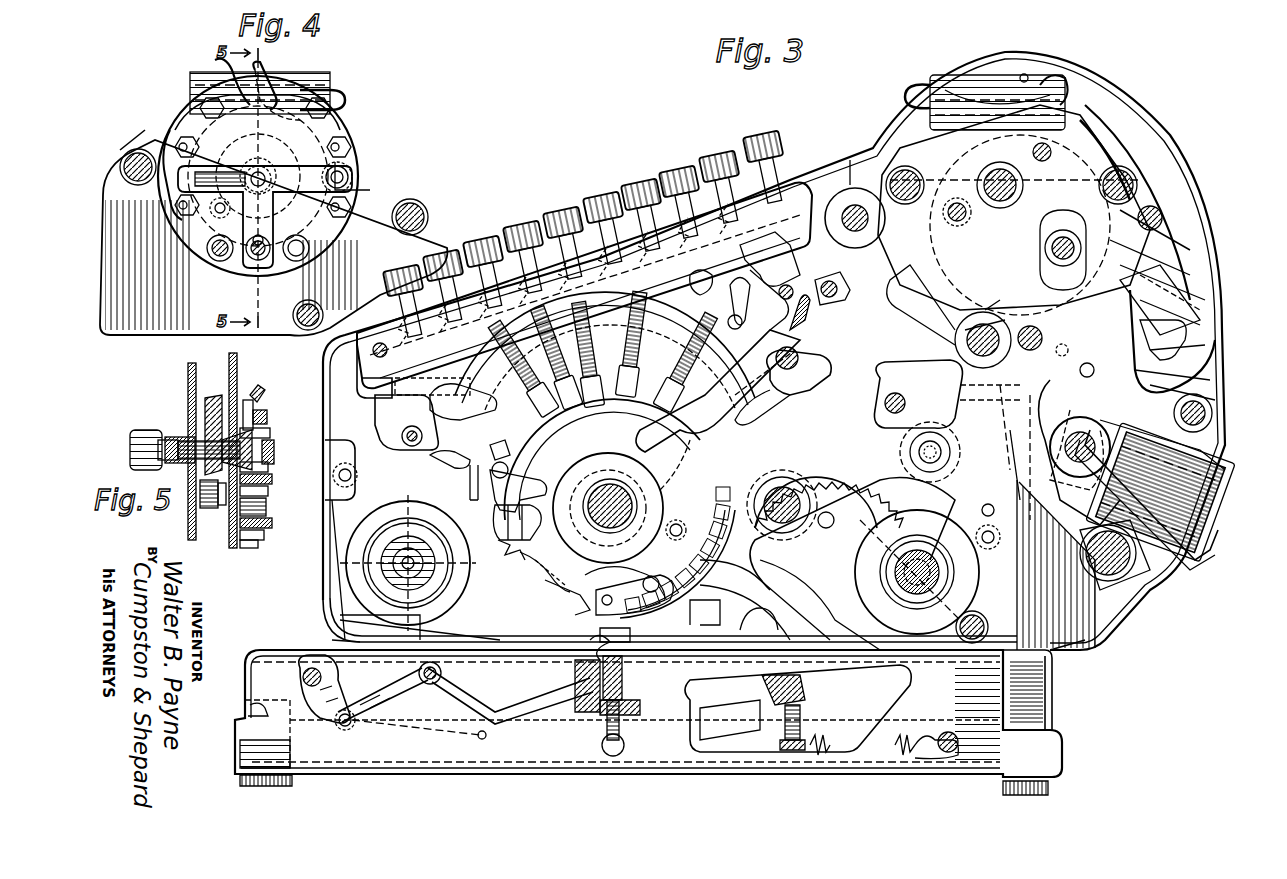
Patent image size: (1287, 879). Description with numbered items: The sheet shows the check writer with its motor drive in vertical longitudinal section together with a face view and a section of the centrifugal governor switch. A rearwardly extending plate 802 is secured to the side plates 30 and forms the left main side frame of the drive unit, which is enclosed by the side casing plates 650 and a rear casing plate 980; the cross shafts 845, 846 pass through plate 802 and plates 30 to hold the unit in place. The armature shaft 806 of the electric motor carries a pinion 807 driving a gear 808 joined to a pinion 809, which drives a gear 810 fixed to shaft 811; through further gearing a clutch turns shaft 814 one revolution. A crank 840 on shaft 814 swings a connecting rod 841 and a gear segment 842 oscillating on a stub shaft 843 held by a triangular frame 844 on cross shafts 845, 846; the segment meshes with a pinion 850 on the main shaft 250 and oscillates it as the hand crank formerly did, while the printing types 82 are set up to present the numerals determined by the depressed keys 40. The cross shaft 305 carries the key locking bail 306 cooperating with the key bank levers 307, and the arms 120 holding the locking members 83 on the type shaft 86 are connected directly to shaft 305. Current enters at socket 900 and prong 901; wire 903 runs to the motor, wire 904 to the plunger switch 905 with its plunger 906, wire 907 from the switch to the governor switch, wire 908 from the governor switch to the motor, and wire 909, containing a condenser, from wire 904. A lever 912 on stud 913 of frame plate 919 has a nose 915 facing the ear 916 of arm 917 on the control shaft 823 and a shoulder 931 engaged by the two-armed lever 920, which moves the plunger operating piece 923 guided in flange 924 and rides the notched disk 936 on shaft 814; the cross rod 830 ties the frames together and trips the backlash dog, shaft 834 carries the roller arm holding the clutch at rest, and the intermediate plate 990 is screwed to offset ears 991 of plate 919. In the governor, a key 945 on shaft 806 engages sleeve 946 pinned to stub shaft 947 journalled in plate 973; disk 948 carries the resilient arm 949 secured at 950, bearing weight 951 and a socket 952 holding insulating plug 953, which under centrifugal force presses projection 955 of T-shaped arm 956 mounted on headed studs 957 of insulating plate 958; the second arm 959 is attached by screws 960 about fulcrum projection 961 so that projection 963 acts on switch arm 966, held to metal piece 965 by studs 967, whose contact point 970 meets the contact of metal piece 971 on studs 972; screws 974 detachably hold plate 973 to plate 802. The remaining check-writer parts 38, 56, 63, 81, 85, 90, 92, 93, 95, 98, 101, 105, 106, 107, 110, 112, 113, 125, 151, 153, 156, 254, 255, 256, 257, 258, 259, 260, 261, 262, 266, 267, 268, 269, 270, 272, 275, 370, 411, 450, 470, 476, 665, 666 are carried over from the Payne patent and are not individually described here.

In FIG. 3, the side plates 30 is at (734, 615).
In FIG. 3, the type bar 38 is at (603, 354).
In FIG. 3, the keys 40 is at (760, 148).
In FIG. 3, the rack 56 is at (662, 380).
In FIG. 3, the latch 63 is at (692, 283).
In FIG. 3, the disc 81 is at (602, 459).
In FIG. 3, the printing types 82 is at (700, 592).
In FIG. 3, the locking members 83 is at (560, 480).
In FIG. 3, the wheel 85 is at (608, 494).
In FIG. 3, the type shaft 86 is at (588, 510).
In FIG. 3, the pawl 90 is at (631, 581).
In FIG. 3, the pin 92 is at (686, 532).
In FIG. 3, the cam slot 93 is at (674, 477).
In FIG. 3, the lever 95 is at (634, 595).
In FIG. 3, the slide 98 is at (505, 520).
In FIG. 3, the hub 101 is at (610, 514).
In FIG. 3, the link 105 is at (530, 560).
In FIG. 3, the spring 106 is at (555, 590).
In FIG. 3, the pawl 107 is at (499, 543).
In FIG. 3, the bar 110 is at (461, 482).
In FIG. 3, the lever 112 is at (518, 482).
In FIG. 3, the pin 113 is at (503, 442).
In FIG. 3, the arms 120 is at (730, 400).
In FIG. 3, the stud 125 is at (909, 404).
In FIG. 3, the lever 151 is at (510, 405).
In FIG. 3, the pivot 153 is at (423, 422).
In FIG. 3, the arm 156 is at (451, 452).
In FIG. 3, the main shaft 250 is at (845, 535).
In FIG. 3, the link 254 is at (765, 600).
In FIG. 3, the link 255 is at (835, 618).
In FIG. 3, the lever 256 is at (807, 708).
In FIG. 3, the plate 257 is at (730, 721).
In FIG. 3, the block 258 is at (808, 685).
In FIG. 3, the screw 259 is at (778, 710).
In FIG. 3, the stud 260 is at (600, 745).
In FIG. 3, the block 261 is at (575, 718).
In FIG. 3, the bracket 262 is at (593, 635).
In FIG. 3, the link 266 is at (510, 696).
In FIG. 3, the pivot 267 is at (442, 673).
In FIG. 3, the link 268 is at (383, 695).
In FIG. 3, the lever 269 is at (337, 689).
In FIG. 3, the pivot 270 is at (350, 724).
In FIG. 3, the rod 272 is at (440, 740).
In FIG. 3, the spring 275 is at (915, 768).
In FIG. 3, the cross shaft 305 is at (783, 386).
In FIG. 3, the key locking bail 306 is at (735, 304).
In FIG. 3, the key bank levers 307 is at (771, 300).
In FIG. 3, the bracket 370 is at (817, 301).
In FIG. 3, the lever 411 is at (788, 262).
In FIG. 3, the wheel 450 is at (470, 583).
In FIG. 3, the bar 470 is at (520, 640).
In FIG. 3, the wheel 476 is at (921, 576).
In FIG. 3, the side casing plates 650 is at (1057, 565).
In FIG. 3, the bracket 665 is at (325, 583).
In FIG. 3, the arm 666 is at (360, 632).
In FIG. 3, the left side frame plate 802 is at (895, 140).
In FIG. 4, the left side frame plate 802 is at (273, 238).
In FIG. 3, the armature shaft 806 is at (982, 185).
In FIG. 5, the armature shaft 806 is at (140, 430).
In FIG. 3, the pinion 807 is at (965, 222).
In FIG. 3, the gear 808 is at (1000, 250).
In FIG. 3, the pinion 809 is at (1063, 237).
In FIG. 3, the gear 810 is at (1175, 240).
In FIG. 3, the shaft 811 is at (1190, 335).
In FIG. 3, the shaft 814 is at (1065, 470).
In FIG. 3, the control shaft 823 is at (1212, 413).
In FIG. 3, the cross rod 830 is at (1105, 580).
In FIG. 3, the shaft 834 is at (1025, 350).
In FIG. 3, the crank 840 is at (1079, 452).
In FIG. 3, the connecting rod 841 is at (950, 451).
In FIG. 3, the gear segment 842 is at (917, 452).
In FIG. 3, the stub shaft 843 is at (918, 394).
In FIG. 3, the triangular frame 844 is at (938, 324).
In FIG. 3, the cross shaft 845 is at (848, 190).
In FIG. 3, the cross shaft 846 is at (955, 330).
In FIG. 3, the pinion 850 is at (802, 505).
In FIG. 3, the socket 900 is at (1195, 535).
In FIG. 3, the male prong 901 is at (1205, 498).
In FIG. 3, the wire 903 is at (1205, 440).
In FIG. 3, the wire 904 is at (1210, 368).
In FIG. 3, the switch 905 is at (1195, 280).
In FIG. 3, the plunger 906 is at (1185, 262).
In FIG. 3, the wire 907 is at (1058, 80).
In FIG. 4, the wire 907 is at (215, 62).
In FIG. 3, the wire 908 is at (1026, 75).
In FIG. 4, the wire 908 is at (265, 68).
In FIG. 3, the wire 909 is at (1110, 160).
In FIG. 4, the wire 909 is at (340, 92).
In FIG. 3, the lever 912 is at (1200, 285).
In FIG. 3, the stud 913 is at (1092, 376).
In FIG. 3, the nose 915 is at (1205, 345).
In FIG. 3, the ear 916 is at (1210, 382).
In FIG. 3, the arm 917 is at (1215, 398).
In FIG. 3, the frame plate 919 is at (972, 386).
In FIG. 3, the two-armed lever 920 is at (1020, 408).
In FIG. 3, the plunger operating piece 923 is at (1205, 300).
In FIG. 3, the fixed flange 924 is at (1200, 318).
In FIG. 3, the shoulder 931 is at (1001, 442).
In FIG. 3, the disk 936 is at (993, 511).
In FIG. 5, the key 945 is at (172, 435).
In FIG. 5, the sleeve 946 is at (158, 458).
In FIG. 5, the governor stub shaft 947 is at (185, 440).
In FIG. 4, the disk 948 is at (300, 195).
In FIG. 5, the disk 948 is at (210, 395).
In FIG. 4, the resilient arm 949 is at (258, 176).
In FIG. 5, the resilient arm 949 is at (245, 432).
In FIG. 4, the securing point 950 is at (345, 115).
In FIG. 5, the securing point 950 is at (232, 362).
In FIG. 4, the weight 951 is at (212, 215).
In FIG. 5, the weight 951 is at (208, 508).
In FIG. 5, the metal socket 952 is at (222, 505).
In FIG. 5, the plug 953 is at (268, 416).
In FIG. 5, the projection 955 is at (268, 467).
In FIG. 4, the T-shaped arm 956 is at (280, 183).
In FIG. 5, the T-shaped arm 956 is at (258, 538).
In FIG. 4, the headed studs 957 is at (255, 260).
In FIG. 4, the insulating plate 958 is at (208, 252).
In FIG. 5, the insulating plate 958 is at (250, 548).
In FIG. 4, the second arm 959 is at (302, 256).
In FIG. 5, the second arm 959 is at (266, 508).
In FIG. 5, the screws 960 is at (272, 523).
In FIG. 5, the projection 961 is at (268, 491).
In FIG. 5, the projection 963 is at (270, 434).
In FIG. 4, the metal piece 965 is at (195, 100).
In FIG. 4, the switch arm 966 is at (345, 225).
In FIG. 5, the switch arm 966 is at (274, 452).
In FIG. 4, the studs 967 is at (168, 130).
In FIG. 4, the contact point 970 is at (348, 160).
In FIG. 4, the metal piece 971 is at (350, 147).
In FIG. 4, the studs 972 is at (385, 192).
In FIG. 5, the studs 972 is at (262, 397).
In FIG. 4, the metal plate 973 is at (135, 140).
In FIG. 5, the metal plate 973 is at (188, 522).
In FIG. 3, the screws 974 is at (1130, 180).
In FIG. 4, the screws 974 is at (370, 195).
In FIG. 3, the rear casing plate 980 is at (1100, 115).
In FIG. 3, the intermediate plate 990 is at (997, 108).
In FIG. 3, the offset ears 991 is at (1066, 212).